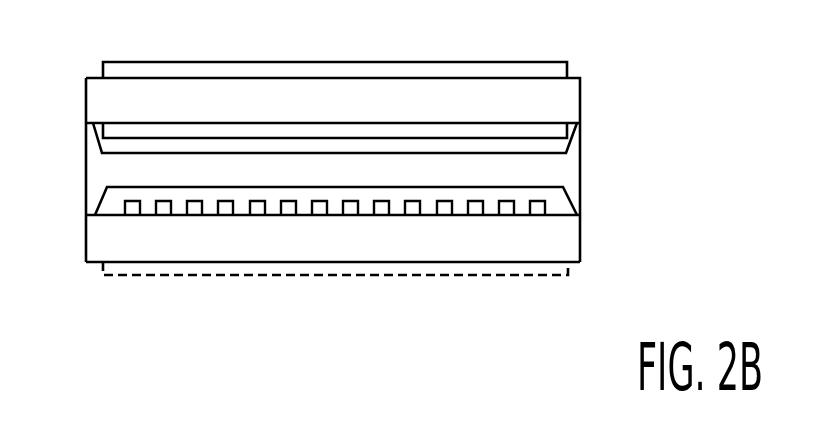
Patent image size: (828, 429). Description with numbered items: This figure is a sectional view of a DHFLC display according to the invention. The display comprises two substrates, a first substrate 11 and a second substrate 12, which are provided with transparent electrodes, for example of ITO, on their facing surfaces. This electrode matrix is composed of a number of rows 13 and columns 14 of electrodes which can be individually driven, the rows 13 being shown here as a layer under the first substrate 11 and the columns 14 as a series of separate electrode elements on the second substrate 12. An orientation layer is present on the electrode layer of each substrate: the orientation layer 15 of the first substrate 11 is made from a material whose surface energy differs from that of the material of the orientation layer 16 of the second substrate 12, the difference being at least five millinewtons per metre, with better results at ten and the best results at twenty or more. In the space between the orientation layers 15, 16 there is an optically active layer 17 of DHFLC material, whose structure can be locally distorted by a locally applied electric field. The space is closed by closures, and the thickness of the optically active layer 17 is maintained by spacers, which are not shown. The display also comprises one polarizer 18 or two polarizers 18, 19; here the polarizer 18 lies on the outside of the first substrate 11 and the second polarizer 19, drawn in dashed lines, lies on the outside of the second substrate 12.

The first substrate 11 is at (567, 98).
The second substrate 12 is at (562, 242).
The rows of electrodes 13 is at (545, 133).
The columns of electrodes 14 is at (412, 215).
The orientation layer 15 is at (110, 147).
The orientation layer 16 is at (110, 198).
The optically active layer 17 is at (210, 175).
The polarizer 18 is at (506, 72).
The polarizer 19 is at (338, 268).